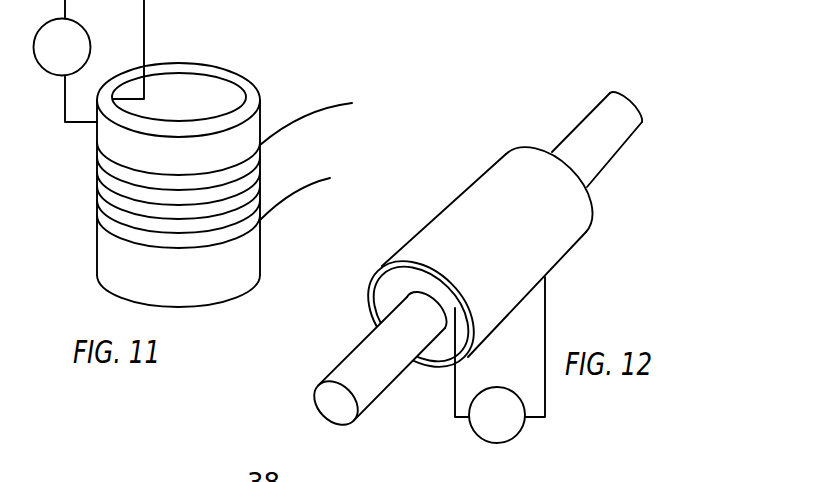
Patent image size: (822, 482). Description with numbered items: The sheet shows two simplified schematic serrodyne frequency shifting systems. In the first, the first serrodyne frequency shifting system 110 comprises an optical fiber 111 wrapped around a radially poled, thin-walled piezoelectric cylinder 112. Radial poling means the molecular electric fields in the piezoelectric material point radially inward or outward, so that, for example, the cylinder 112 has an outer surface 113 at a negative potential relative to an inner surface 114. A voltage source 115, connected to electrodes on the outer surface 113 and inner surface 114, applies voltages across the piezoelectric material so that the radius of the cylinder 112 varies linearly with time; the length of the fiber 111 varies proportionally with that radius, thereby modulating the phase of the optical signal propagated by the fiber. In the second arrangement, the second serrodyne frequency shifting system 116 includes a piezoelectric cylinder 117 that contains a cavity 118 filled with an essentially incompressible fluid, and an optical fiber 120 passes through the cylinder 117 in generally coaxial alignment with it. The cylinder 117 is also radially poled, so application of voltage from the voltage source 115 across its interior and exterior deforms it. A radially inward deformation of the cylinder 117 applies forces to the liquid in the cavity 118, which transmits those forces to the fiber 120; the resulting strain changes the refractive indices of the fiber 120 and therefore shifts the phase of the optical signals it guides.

In FIG. 11, the first serrodyne frequency shifting system 110 is at (190, 173).
In FIG. 11, the optical fiber 111 is at (290, 197).
In FIG. 11, the piezoelectric cylinder 112 is at (246, 292).
In FIG. 11, the outer surface 113 is at (232, 81).
In FIG. 11, the inner surface 114 is at (107, 137).
In FIG. 11, the voltage source 115 is at (81, 22).
In FIG. 12, the voltage source 115 is at (520, 430).
In FIG. 12, the second serrodyne frequency shifting system 116 is at (451, 244).
In FIG. 12, the piezoelectric cylinder 117 is at (562, 257).
In FIG. 12, the cavity 118 is at (383, 294).
In FIG. 12, the optical fiber 120 is at (389, 385).